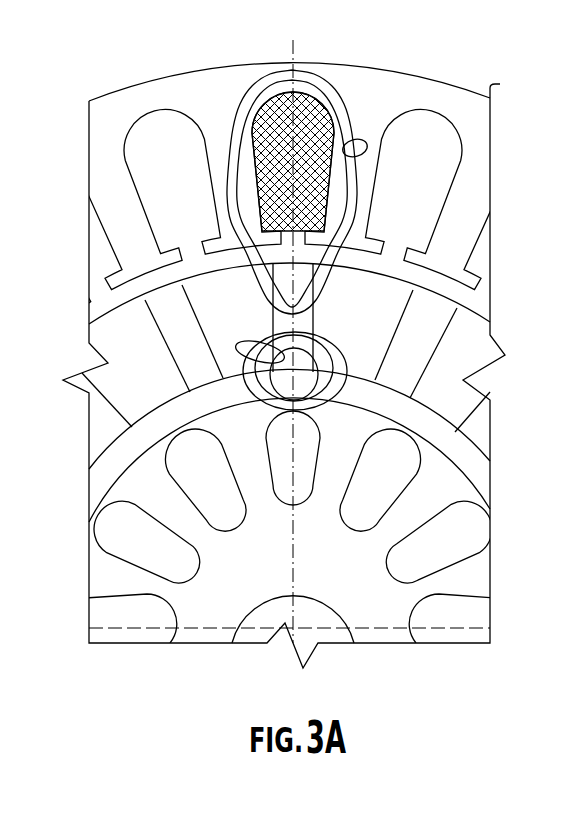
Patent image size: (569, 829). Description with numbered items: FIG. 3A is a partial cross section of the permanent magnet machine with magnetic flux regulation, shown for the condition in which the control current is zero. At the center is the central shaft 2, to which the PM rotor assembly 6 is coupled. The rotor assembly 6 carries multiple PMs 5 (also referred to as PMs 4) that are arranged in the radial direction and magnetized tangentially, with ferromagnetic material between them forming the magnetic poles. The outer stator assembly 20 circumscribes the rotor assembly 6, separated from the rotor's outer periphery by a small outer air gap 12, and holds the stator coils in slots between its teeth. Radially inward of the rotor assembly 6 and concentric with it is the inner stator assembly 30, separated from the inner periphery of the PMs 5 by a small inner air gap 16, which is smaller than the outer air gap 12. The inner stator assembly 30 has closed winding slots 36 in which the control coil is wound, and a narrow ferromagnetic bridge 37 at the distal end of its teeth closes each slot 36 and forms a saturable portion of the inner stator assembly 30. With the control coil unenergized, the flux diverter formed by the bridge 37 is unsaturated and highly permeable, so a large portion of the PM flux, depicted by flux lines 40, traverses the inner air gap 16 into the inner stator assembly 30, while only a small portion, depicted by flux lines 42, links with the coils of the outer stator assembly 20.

The central shaft 2 is at (280, 614).
The PMs 4 is at (452, 374).
The PMs 5 is at (200, 368).
The PM rotor assembly 6 is at (150, 395).
The outer air gap 12 is at (484, 309).
The inner air gap 16 is at (483, 473).
The outer stator assembly 20 is at (496, 86).
The inner stator assembly 30 is at (200, 600).
The closed winding slots 36 is at (222, 490).
The ferromagnetic bridge 37 is at (170, 437).
The flux lines 40 is at (236, 347).
The flux lines 42 is at (360, 141).